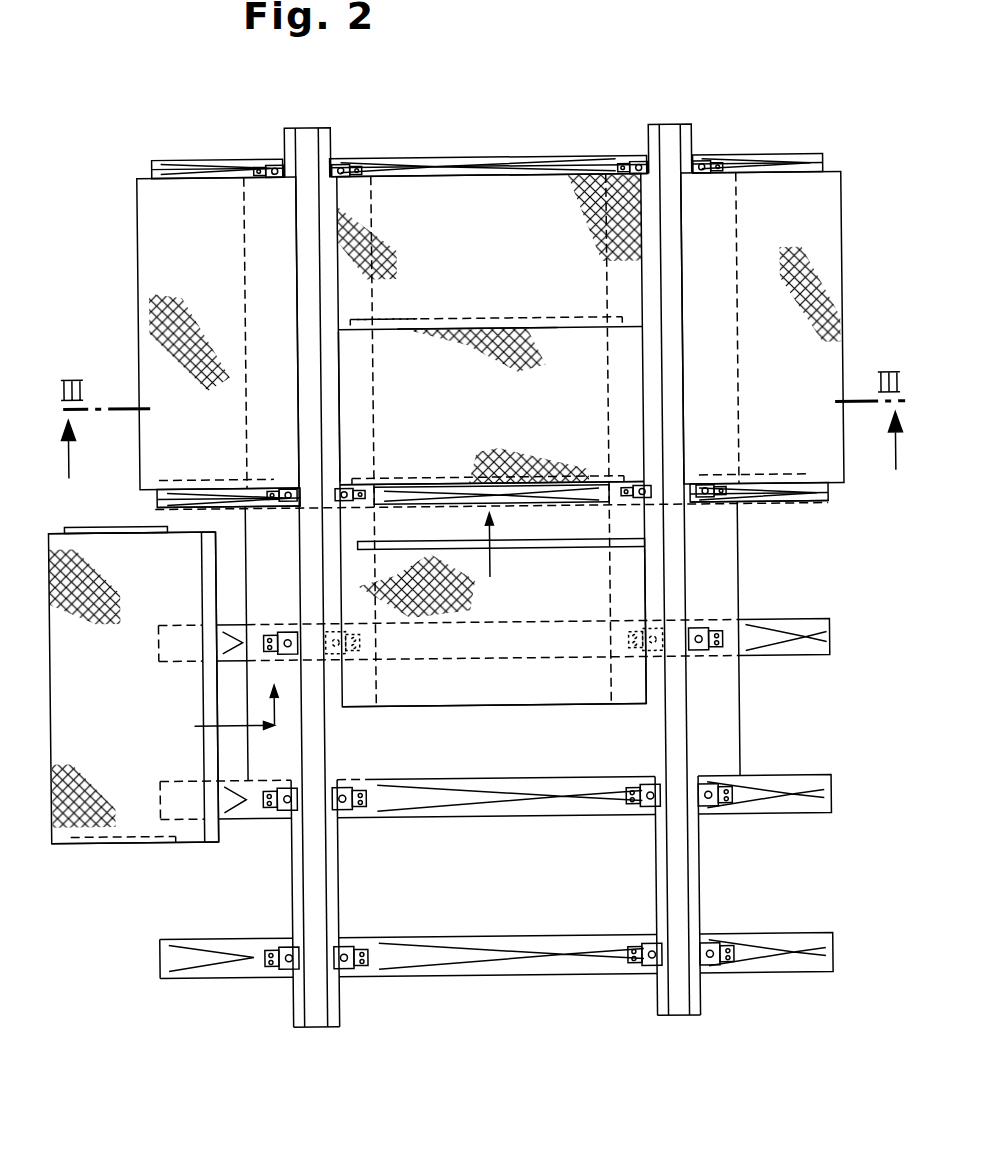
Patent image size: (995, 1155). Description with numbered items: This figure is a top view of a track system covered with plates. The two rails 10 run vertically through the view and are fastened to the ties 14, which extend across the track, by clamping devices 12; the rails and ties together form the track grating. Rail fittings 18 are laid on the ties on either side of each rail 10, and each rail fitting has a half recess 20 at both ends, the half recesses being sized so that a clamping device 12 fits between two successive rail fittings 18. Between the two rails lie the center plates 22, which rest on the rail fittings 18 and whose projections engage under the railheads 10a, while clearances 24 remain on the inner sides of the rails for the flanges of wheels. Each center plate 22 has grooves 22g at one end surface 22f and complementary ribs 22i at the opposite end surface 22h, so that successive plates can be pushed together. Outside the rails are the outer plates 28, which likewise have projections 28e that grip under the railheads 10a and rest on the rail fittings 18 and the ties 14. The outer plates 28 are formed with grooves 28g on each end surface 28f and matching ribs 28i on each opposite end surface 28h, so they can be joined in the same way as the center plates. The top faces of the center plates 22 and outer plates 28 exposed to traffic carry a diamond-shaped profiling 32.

The rail 10 is at (336, 1010).
The railhead 10a is at (307, 138).
The clamping device 12 is at (341, 165).
The tie 14 is at (815, 500).
The rail fitting 18 is at (285, 561).
The half recess 20 is at (340, 492).
The center plate 22 is at (502, 218).
The end surface 22f is at (538, 488).
The groove 22g is at (432, 318).
The opposite end surface 22h is at (468, 165).
The rib 22i is at (512, 165).
The clearance 24 is at (330, 406).
The outer plate 28 is at (191, 218).
The projection 28e is at (214, 595).
The end surface 28f is at (183, 843).
The groove 28g is at (207, 480).
The opposite end surface 28h is at (52, 529).
The rib 28i is at (196, 172).
The diamond-shaped profiling 32 is at (518, 330).